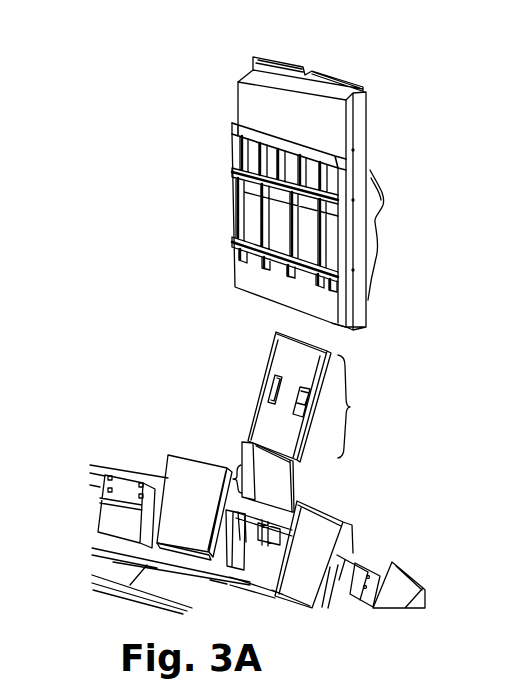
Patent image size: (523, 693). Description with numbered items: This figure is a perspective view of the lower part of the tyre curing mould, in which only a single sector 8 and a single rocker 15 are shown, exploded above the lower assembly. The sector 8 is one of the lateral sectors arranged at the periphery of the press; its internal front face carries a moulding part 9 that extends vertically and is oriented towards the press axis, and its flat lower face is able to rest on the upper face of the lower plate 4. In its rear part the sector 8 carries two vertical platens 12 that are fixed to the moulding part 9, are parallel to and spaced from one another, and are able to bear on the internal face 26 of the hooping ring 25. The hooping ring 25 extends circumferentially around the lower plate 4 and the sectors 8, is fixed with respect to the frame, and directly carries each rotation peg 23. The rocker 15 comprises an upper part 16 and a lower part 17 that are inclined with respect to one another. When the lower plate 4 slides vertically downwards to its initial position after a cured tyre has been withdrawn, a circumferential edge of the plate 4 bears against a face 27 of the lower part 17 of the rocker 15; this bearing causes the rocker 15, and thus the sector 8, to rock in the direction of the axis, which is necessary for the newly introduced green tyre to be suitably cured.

The lateral sector 8 is at (231, 84).
The moulding part 9 is at (244, 179).
The vertical platen 12 is at (374, 221).
The rocker 15 is at (273, 338).
The upper part 16 is at (358, 406).
The lower part 17 is at (228, 463).
The rotation peg 23 is at (250, 528).
The hooping ring 25 is at (183, 483).
The internal face 26 is at (274, 572).
The face 27 is at (281, 481).
The lower plate 4 is at (283, 606).